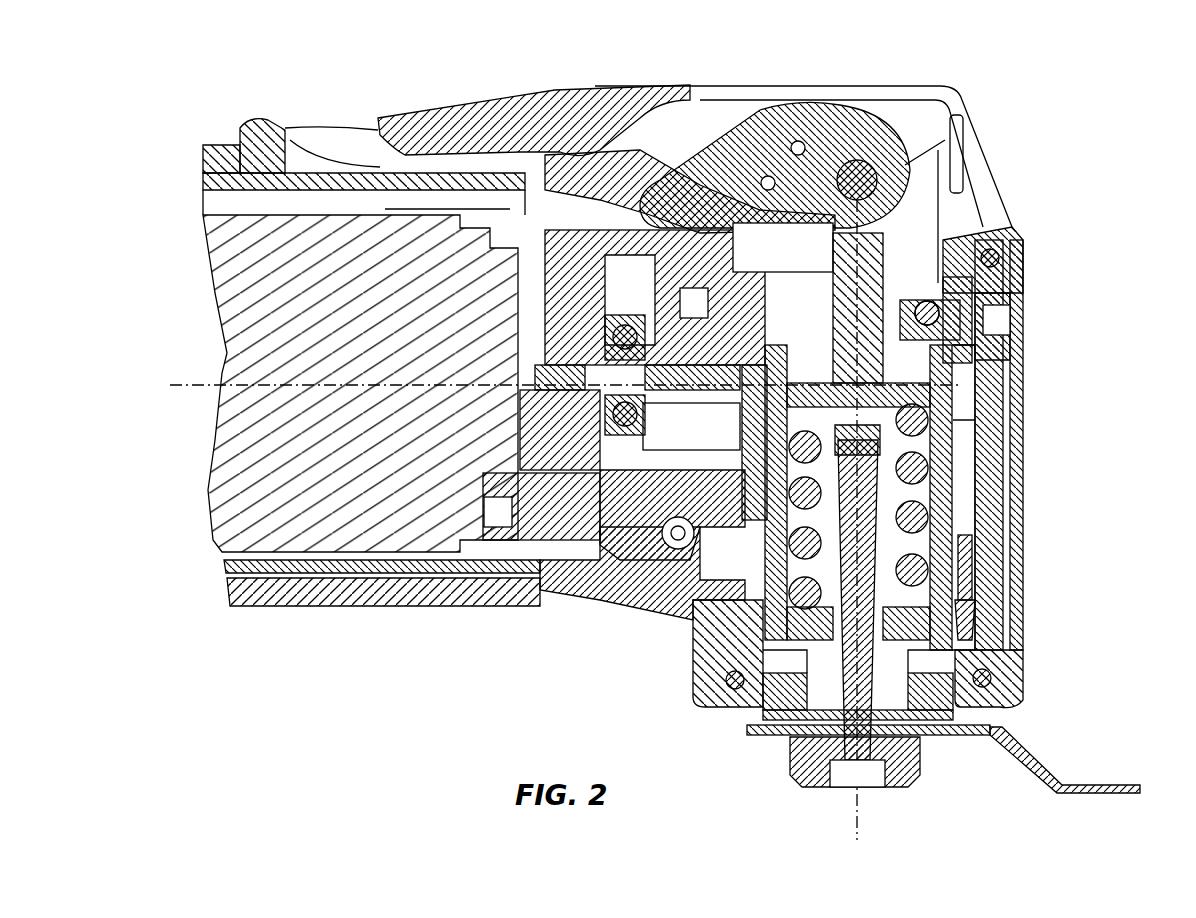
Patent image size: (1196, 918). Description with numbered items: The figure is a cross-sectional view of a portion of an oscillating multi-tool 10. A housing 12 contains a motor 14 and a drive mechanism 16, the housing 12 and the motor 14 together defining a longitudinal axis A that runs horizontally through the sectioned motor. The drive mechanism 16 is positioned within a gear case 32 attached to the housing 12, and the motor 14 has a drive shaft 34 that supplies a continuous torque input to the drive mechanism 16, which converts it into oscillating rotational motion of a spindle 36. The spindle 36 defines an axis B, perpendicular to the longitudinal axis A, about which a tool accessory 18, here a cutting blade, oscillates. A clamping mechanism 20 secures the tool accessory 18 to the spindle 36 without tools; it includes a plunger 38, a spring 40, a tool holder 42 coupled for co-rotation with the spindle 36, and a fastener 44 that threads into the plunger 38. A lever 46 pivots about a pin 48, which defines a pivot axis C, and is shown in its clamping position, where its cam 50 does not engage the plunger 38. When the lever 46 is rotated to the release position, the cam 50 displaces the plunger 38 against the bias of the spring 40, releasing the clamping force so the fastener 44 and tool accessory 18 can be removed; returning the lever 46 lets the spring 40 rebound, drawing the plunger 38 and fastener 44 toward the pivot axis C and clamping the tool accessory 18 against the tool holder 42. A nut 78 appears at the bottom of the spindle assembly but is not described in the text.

The oscillating multi-tool 10 is at (1048, 100).
The housing 12 is at (410, 606).
The motor 14 is at (350, 238).
The drive mechanism 16 is at (618, 285).
The tool accessory 18 is at (1137, 790).
The clamping mechanism 20 is at (725, 712).
The gear case 32 is at (933, 512).
The drive shaft 34 is at (556, 573).
The spindle 36 is at (950, 440).
The plunger 38 is at (865, 256).
The spring 40 is at (957, 510).
The tool holder 42 is at (955, 718).
The fastener 44 is at (953, 650).
The lever 46 is at (630, 90).
The pin 48 is at (905, 165).
The cam 50 is at (883, 165).
The nut 78 is at (925, 770).
The longitudinal axis A is at (311, 387).
The axis B is at (861, 798).
The pivot axis C is at (846, 175).